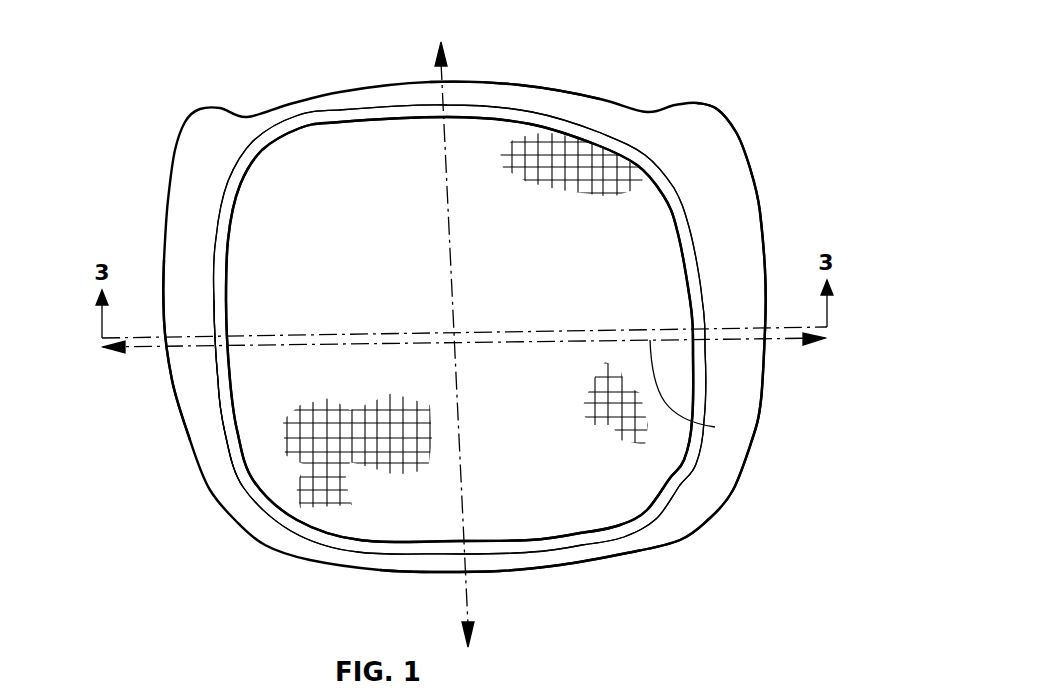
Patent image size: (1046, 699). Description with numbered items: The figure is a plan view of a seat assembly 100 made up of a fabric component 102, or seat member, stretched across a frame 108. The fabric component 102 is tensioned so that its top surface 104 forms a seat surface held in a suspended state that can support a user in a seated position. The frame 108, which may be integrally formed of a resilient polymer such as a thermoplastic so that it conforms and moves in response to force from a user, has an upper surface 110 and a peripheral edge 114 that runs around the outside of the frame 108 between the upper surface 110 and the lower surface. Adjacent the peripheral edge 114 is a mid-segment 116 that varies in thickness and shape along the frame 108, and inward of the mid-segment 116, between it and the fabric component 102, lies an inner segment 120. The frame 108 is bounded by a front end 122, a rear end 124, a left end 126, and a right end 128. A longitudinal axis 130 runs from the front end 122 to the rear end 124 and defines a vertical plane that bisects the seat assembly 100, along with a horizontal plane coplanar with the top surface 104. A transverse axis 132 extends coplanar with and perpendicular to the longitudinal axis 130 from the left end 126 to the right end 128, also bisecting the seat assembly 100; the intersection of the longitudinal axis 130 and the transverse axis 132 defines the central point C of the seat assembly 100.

The seat assembly 100 is at (467, 323).
The fabric component 102 is at (387, 275).
The top surface 104 is at (358, 242).
The frame 108 is at (590, 108).
The upper surface 110 is at (207, 148).
The peripheral edge 114 is at (737, 460).
The mid-segment 116 is at (733, 236).
The inner segment 120 is at (223, 397).
The front end 122 is at (488, 562).
The rear end 124 is at (470, 88).
The left end 126 is at (183, 355).
The right end 128 is at (755, 345).
The longitudinal axis 130 is at (462, 588).
The transverse axis 132 is at (715, 427).